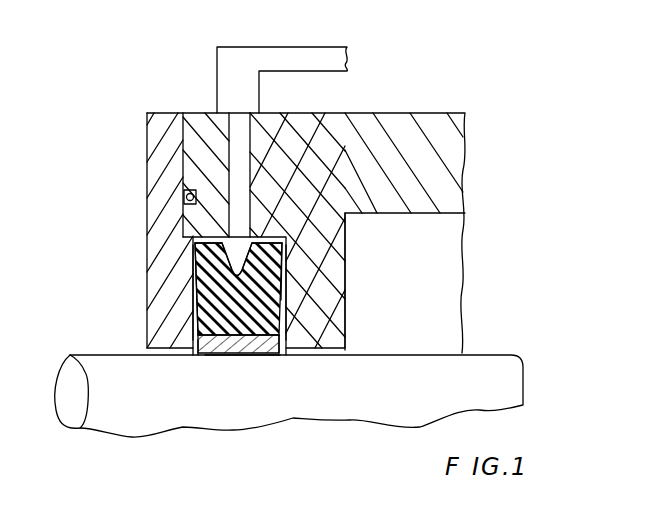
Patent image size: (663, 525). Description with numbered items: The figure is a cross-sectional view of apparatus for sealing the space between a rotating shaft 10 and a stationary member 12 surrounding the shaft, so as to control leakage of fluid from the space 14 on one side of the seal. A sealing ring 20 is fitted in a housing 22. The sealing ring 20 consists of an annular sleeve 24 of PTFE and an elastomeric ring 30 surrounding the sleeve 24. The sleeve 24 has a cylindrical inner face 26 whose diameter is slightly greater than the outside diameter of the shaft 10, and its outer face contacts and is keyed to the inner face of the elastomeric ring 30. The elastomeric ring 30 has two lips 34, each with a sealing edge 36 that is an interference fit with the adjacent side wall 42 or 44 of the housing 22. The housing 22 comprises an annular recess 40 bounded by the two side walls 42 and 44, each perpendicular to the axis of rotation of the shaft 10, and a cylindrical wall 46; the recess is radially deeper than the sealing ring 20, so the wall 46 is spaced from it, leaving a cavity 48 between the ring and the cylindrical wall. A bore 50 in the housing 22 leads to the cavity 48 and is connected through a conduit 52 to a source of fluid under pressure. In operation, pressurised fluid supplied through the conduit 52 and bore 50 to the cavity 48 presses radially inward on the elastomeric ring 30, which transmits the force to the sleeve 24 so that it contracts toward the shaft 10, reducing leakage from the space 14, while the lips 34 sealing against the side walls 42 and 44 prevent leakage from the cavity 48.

The rotating shaft 10 is at (88, 368).
The stationary member 12 is at (413, 111).
The space 14 is at (446, 260).
The sealing ring 20 is at (289, 297).
The housing 22 is at (284, 343).
The annular sleeve 24 is at (240, 357).
The cylindrical inner face 26 is at (207, 357).
The elastomeric ring 30 is at (197, 297).
The lips 34 is at (195, 280).
The sealing edge 36 is at (195, 258).
The annular recess 40 is at (200, 243).
The side wall 42 is at (284, 330).
The side wall 44 is at (200, 325).
The cylindrical wall 46 is at (287, 240).
The cavity 48 is at (241, 253).
The bore 50 is at (233, 128).
The conduit 52 is at (302, 55).